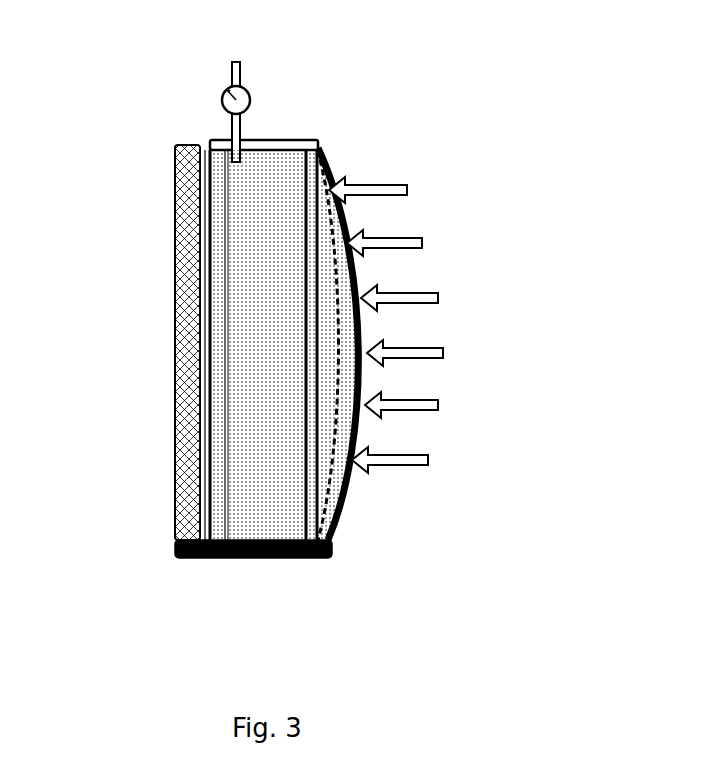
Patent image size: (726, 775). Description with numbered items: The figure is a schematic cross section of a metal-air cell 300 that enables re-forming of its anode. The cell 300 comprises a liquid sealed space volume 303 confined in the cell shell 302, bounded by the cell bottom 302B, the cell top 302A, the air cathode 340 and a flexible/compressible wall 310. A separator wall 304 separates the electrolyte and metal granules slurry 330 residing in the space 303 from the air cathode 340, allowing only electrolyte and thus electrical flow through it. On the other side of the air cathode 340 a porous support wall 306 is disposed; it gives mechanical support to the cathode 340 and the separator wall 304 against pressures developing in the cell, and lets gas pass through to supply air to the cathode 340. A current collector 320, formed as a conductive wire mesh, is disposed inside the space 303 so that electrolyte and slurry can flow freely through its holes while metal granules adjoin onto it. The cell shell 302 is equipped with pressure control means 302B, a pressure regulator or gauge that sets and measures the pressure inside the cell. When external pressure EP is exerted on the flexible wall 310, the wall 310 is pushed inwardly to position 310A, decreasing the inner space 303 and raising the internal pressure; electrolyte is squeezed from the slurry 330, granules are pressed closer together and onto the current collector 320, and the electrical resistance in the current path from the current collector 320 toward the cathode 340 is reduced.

The metal-air cell 300 is at (278, 354).
The cell shell 302 is at (270, 333).
The cell top 302A is at (295, 140).
The cell bottom / pressure control means 302B is at (242, 70).
The liquid sealed space volume 303 is at (278, 517).
The separator wall 304 is at (213, 460).
The porous support wall 306 is at (195, 428).
The flexible/compressible wall 310 is at (343, 490).
The position of flexible wall 310A is at (330, 468).
The current collector 320 is at (318, 145).
The metal granules slurry 330 is at (226, 167).
The air cathode 340 is at (203, 167).
The external pressure EP is at (424, 325).